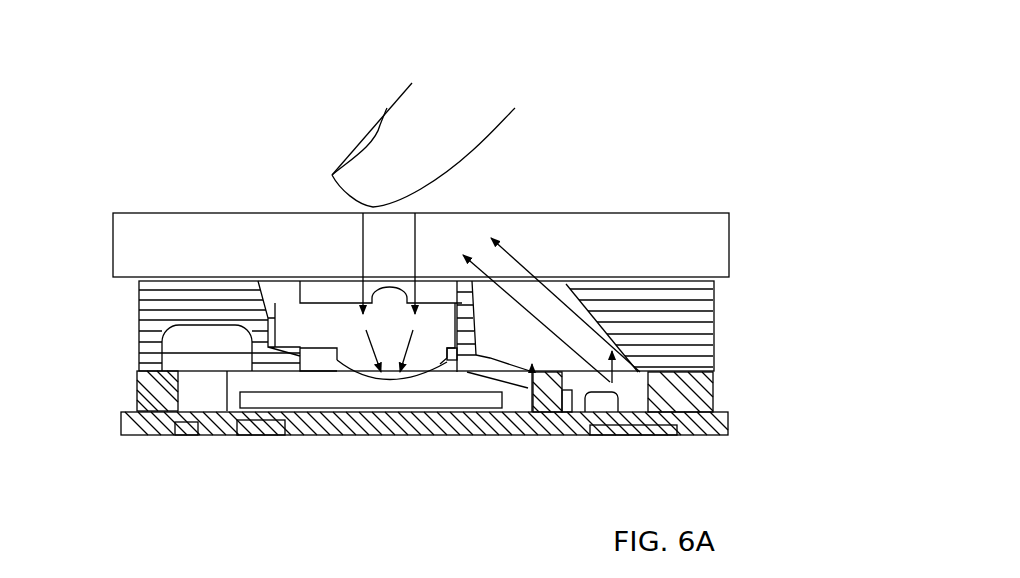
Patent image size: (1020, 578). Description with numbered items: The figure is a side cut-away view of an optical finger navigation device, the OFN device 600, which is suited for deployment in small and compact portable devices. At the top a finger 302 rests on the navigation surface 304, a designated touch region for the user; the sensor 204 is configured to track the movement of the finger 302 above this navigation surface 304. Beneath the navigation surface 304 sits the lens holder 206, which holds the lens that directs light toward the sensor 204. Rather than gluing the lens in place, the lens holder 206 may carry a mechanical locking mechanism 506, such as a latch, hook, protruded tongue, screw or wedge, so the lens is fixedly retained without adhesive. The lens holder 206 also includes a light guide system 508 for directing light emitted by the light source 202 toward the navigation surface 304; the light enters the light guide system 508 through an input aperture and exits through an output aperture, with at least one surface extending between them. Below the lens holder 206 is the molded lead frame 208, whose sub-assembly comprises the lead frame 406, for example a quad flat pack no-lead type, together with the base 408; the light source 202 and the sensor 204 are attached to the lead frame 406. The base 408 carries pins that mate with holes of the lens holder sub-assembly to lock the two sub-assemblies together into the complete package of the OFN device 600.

The OFN device 600 is at (692, 71).
The finger 302 is at (420, 108).
The navigation surface 304 is at (148, 230).
The lens holder 206 is at (137, 327).
The base 408 is at (135, 398).
The lead frame 406 is at (122, 424).
The molded lead frame 208 is at (150, 448).
The sensor 204 is at (352, 403).
The mechanical locking mechanism 506 is at (457, 372).
The light guide system 508 is at (531, 412).
The light source 202 is at (600, 410).